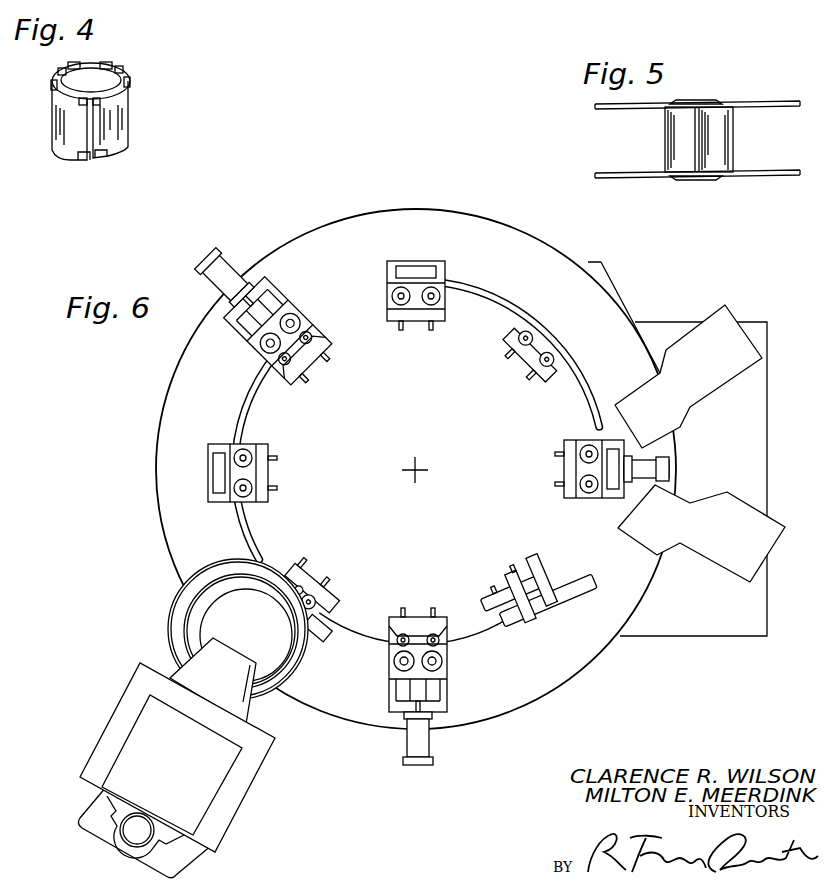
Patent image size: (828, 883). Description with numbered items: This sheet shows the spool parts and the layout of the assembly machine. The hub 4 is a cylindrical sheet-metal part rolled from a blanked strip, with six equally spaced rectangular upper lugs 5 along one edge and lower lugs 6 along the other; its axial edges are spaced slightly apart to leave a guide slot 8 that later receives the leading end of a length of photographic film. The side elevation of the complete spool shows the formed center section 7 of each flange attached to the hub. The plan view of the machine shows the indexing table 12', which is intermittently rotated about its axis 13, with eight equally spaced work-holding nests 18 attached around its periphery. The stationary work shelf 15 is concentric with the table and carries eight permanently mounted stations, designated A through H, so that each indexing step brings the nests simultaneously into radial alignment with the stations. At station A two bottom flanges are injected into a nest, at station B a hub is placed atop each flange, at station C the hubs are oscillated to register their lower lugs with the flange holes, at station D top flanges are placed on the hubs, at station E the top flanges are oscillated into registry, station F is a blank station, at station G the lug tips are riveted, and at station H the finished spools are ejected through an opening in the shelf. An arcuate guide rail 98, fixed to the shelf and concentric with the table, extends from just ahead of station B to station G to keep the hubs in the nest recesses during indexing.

In FIG. 4, the hub 4 is at (128, 107).
In FIG. 4, the upper lugs 5 is at (107, 63).
In FIG. 4, the lower lugs 6 is at (107, 158).
In FIG. 5, the center section 7 is at (695, 100).
In FIG. 4, the guide slot 8 is at (90, 150).
In FIG. 5, the guide slot 8 is at (694, 154).
In FIG. 6, the work shelf 15 is at (320, 239).
In FIG. 6, the indexing table 12' is at (417, 463).
In FIG. 6, the axis 13 is at (415, 470).
In FIG. 6, the nests 18 is at (314, 378).
In FIG. 6, the arcuate guide rail 98 is at (329, 623).
In FIG. 6, the station A is at (418, 699).
In FIG. 6, the station B is at (174, 613).
In FIG. 6, the station C is at (200, 477).
In FIG. 6, the station D is at (258, 314).
In FIG. 6, the station E is at (415, 262).
In FIG. 6, the station F is at (551, 331).
In FIG. 6, the station G is at (672, 466).
In FIG. 6, the station H is at (565, 612).